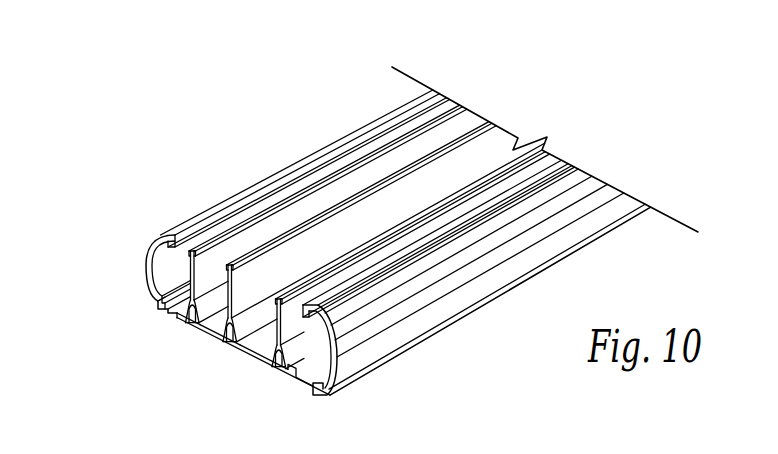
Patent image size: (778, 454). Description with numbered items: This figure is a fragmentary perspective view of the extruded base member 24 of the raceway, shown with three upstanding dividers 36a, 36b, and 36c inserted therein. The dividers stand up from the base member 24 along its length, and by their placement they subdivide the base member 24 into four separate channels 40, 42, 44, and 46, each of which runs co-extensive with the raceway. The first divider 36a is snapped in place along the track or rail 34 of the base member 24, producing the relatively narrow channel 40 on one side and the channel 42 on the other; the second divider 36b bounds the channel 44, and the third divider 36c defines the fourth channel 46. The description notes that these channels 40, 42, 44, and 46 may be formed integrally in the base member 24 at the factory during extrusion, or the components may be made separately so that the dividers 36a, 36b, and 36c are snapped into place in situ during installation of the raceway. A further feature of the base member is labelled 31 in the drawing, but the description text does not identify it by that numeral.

The base member 24 is at (437, 231).
The channel 40 is at (261, 201).
The divider 36a is at (274, 228).
The divider 36b is at (373, 283).
The divider 36c is at (408, 297).
The second C-shaped channel 31 is at (463, 283).
The track or rail 34 is at (165, 357).
The channel 42 is at (201, 375).
The channel 44 is at (258, 369).
The channel 46 is at (324, 402).